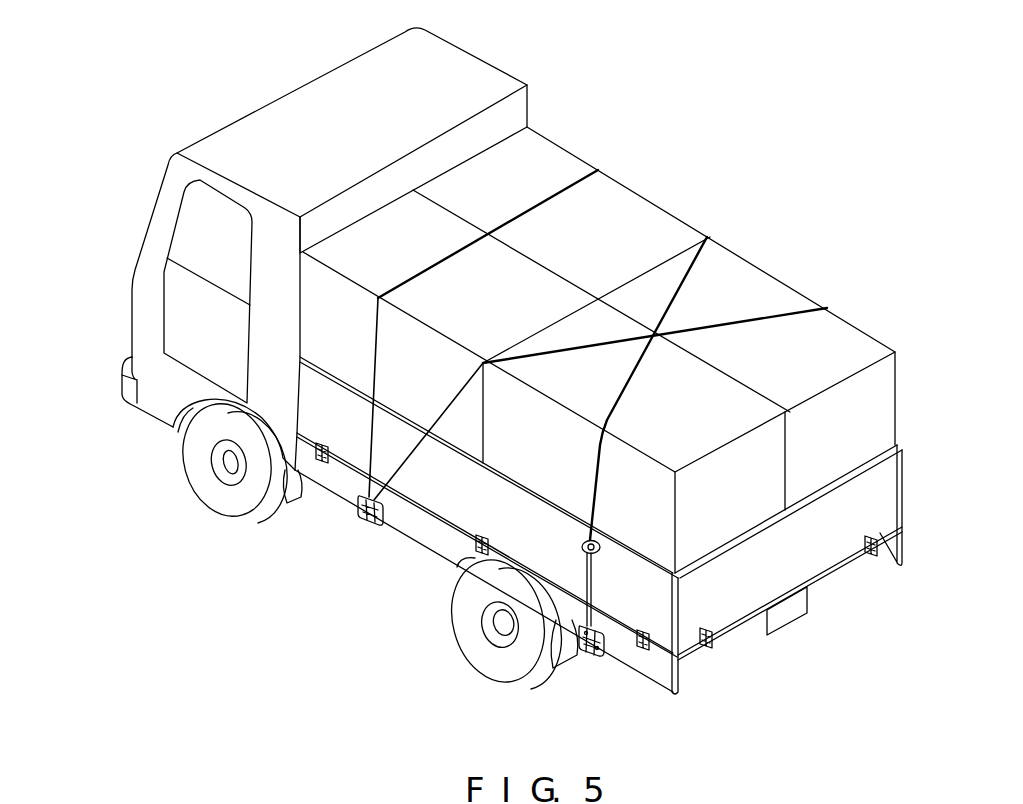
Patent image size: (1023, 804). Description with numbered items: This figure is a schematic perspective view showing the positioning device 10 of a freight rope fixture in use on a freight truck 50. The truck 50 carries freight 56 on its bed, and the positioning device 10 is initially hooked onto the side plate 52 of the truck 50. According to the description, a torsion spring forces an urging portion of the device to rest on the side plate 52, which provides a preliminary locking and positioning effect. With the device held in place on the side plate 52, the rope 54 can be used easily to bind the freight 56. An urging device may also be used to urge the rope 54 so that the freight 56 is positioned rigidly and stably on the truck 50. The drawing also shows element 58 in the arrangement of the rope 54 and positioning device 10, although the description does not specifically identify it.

The rope tightening device 10 is at (590, 656).
The freight truck 50 is at (331, 575).
The side plate 52 is at (657, 673).
The rope 54 is at (597, 477).
The freight 56 is at (887, 401).
The hook ring 58 is at (595, 552).